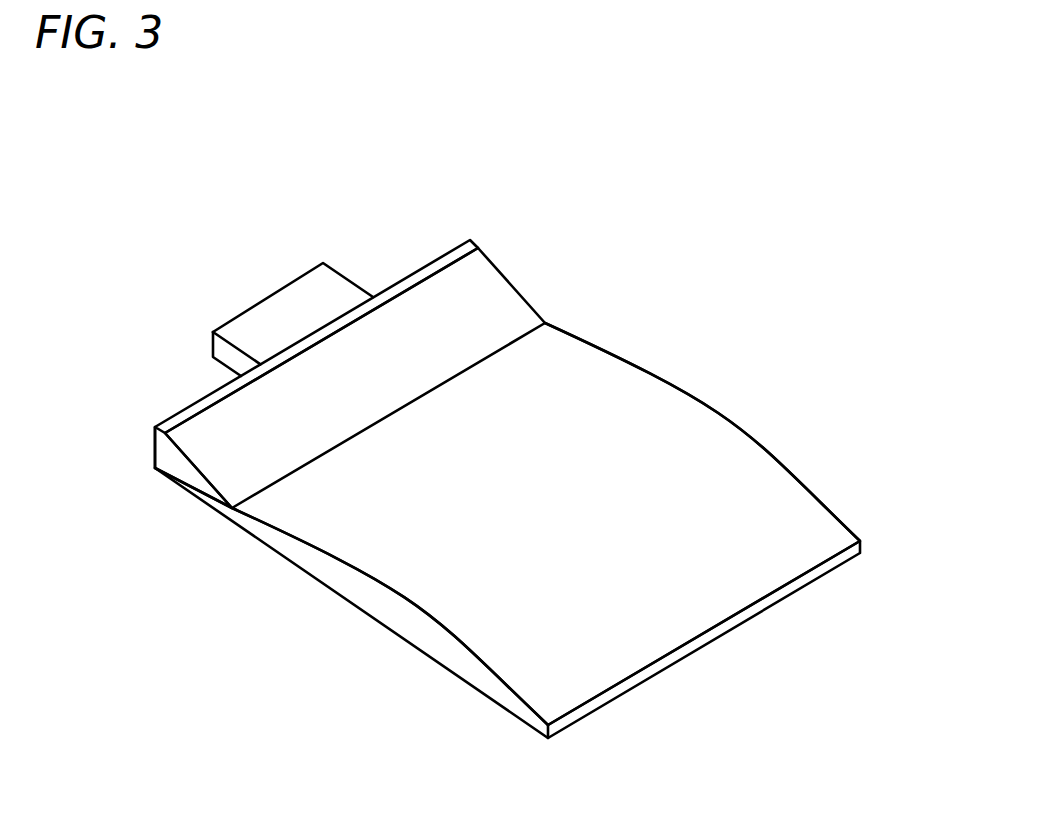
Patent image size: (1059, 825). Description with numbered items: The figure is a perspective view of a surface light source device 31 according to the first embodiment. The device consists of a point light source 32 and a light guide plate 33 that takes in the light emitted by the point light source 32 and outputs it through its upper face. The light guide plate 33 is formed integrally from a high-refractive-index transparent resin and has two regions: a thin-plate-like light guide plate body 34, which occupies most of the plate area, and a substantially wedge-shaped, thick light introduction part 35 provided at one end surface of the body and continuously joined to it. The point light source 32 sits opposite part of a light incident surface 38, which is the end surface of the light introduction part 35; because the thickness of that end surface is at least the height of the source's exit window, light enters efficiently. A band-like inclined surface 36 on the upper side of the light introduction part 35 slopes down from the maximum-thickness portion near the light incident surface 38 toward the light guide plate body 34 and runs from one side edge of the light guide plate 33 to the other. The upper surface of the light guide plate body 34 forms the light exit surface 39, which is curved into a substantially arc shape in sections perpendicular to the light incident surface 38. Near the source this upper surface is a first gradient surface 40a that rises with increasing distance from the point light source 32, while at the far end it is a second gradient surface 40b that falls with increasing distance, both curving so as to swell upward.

The surface light source device 31 is at (685, 134).
The point light source 32 is at (278, 317).
The light guide plate 33 is at (602, 393).
The light guide plate body 34 is at (435, 655).
The light introduction part 35 is at (187, 477).
The inclined surface 36 is at (405, 327).
The light incident surface 38 is at (210, 393).
The light exit surface 39 is at (585, 510).
The first gradient surface 40a is at (452, 428).
The second gradient surface 40b is at (657, 602).